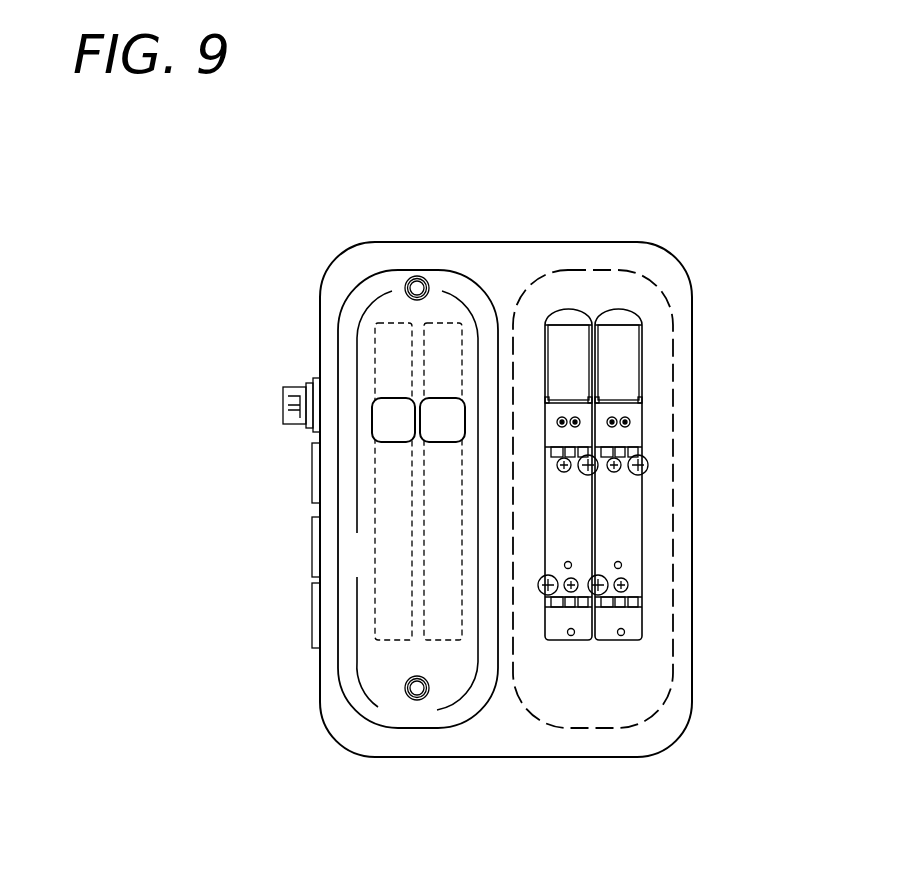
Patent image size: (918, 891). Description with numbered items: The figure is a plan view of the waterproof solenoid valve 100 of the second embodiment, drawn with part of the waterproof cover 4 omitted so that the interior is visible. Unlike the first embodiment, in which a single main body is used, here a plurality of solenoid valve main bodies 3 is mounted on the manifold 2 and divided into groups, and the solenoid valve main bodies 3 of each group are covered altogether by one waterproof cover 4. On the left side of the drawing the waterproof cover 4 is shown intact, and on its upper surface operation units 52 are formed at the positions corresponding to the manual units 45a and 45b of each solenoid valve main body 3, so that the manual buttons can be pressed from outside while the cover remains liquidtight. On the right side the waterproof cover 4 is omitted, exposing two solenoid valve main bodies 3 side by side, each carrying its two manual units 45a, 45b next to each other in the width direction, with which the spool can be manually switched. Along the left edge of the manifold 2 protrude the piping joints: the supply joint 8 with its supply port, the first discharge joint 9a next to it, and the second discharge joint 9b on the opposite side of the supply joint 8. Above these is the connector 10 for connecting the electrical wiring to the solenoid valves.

The waterproof solenoid valve 100 is at (485, 474).
The manifold 2 is at (503, 733).
The waterproof cover 4 is at (358, 292).
The solenoid valve main body 3 is at (620, 340).
The operation unit 52 is at (443, 388).
The manual unit 45a is at (630, 421).
The manual unit 45b is at (614, 426).
The connector 10 is at (283, 397).
The first discharge joint 9a is at (312, 470).
The supply joint 8 is at (311, 555).
The second discharge joint 9b is at (311, 628).